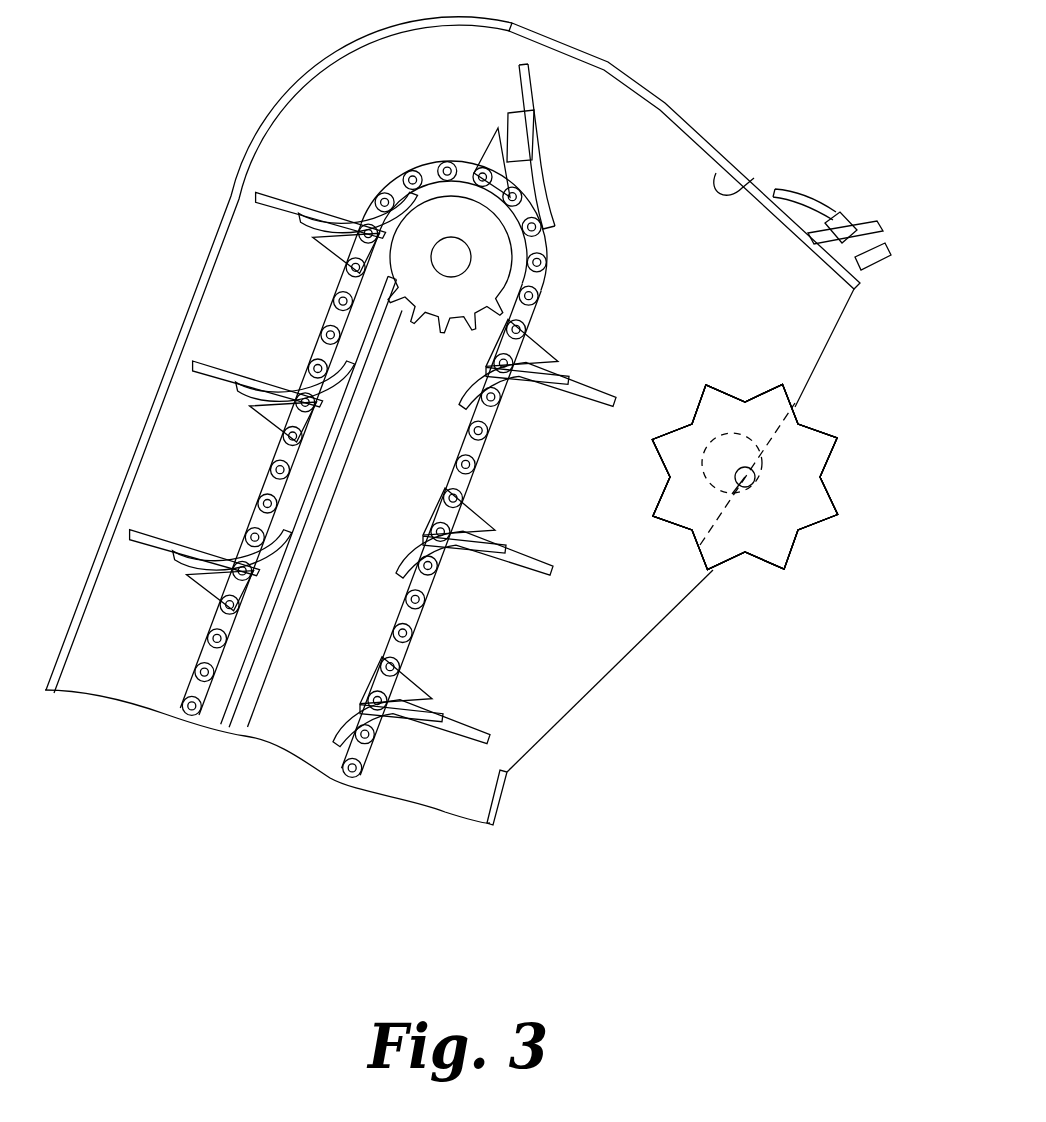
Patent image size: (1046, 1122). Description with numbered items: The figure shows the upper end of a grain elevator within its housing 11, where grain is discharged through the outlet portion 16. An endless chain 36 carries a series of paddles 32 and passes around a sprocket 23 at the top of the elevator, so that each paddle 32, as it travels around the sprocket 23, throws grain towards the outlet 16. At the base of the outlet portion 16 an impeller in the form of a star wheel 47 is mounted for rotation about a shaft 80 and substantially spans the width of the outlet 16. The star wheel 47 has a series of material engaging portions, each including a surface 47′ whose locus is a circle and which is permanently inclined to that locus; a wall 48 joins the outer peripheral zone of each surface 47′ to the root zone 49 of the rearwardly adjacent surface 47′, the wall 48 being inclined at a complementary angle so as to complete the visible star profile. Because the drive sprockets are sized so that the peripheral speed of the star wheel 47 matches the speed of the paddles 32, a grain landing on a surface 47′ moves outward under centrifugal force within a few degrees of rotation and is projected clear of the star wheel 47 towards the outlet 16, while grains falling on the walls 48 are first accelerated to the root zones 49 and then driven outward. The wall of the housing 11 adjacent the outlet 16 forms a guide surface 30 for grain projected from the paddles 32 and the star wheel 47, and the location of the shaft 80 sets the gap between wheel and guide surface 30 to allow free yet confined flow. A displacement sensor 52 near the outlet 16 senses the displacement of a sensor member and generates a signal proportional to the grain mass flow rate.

The housing 11 is at (212, 124).
The outlet portion 16 is at (862, 292).
The sprocket 23 is at (447, 322).
The guide surface 30 is at (738, 188).
The paddles 32 is at (540, 88).
The endless chain 36 is at (197, 645).
The star wheel 47 is at (725, 568).
The surface 47′ is at (665, 497).
The wall 48 is at (700, 388).
The root zone 49 is at (695, 420).
The displacement sensor 52 is at (855, 215).
The shaft 80 is at (732, 494).